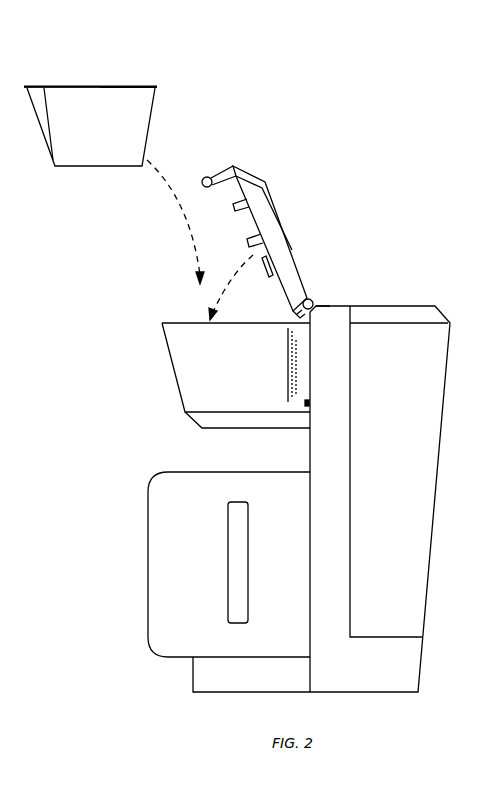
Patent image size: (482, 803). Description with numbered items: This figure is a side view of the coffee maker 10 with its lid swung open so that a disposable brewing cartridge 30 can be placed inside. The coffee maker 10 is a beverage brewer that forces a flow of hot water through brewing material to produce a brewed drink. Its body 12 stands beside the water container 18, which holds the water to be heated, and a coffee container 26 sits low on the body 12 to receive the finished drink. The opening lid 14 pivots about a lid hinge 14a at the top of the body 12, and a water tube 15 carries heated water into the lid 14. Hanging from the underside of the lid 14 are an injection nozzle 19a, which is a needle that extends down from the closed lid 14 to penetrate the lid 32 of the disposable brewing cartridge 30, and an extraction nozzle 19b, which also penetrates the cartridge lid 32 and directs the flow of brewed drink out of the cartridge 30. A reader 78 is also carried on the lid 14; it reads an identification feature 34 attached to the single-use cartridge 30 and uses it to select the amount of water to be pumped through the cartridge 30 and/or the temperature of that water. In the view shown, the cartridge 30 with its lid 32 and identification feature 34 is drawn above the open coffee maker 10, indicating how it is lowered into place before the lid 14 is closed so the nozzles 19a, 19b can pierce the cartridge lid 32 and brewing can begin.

The coffee maker 10 is at (400, 259).
The body 12 is at (251, 375).
The opening lid 14 is at (287, 268).
The lid hinge 14a is at (310, 297).
The water tube 15 is at (322, 305).
The water container 18 is at (399, 471).
The injection nozzle 19a is at (247, 241).
The extraction nozzle 19b is at (233, 206).
The coffee container 26 is at (229, 564).
The disposable brewing cartridge 30 is at (90, 127).
The lid 32 is at (87, 87).
The identification feature 34 is at (133, 87).
The reader 78 is at (263, 273).